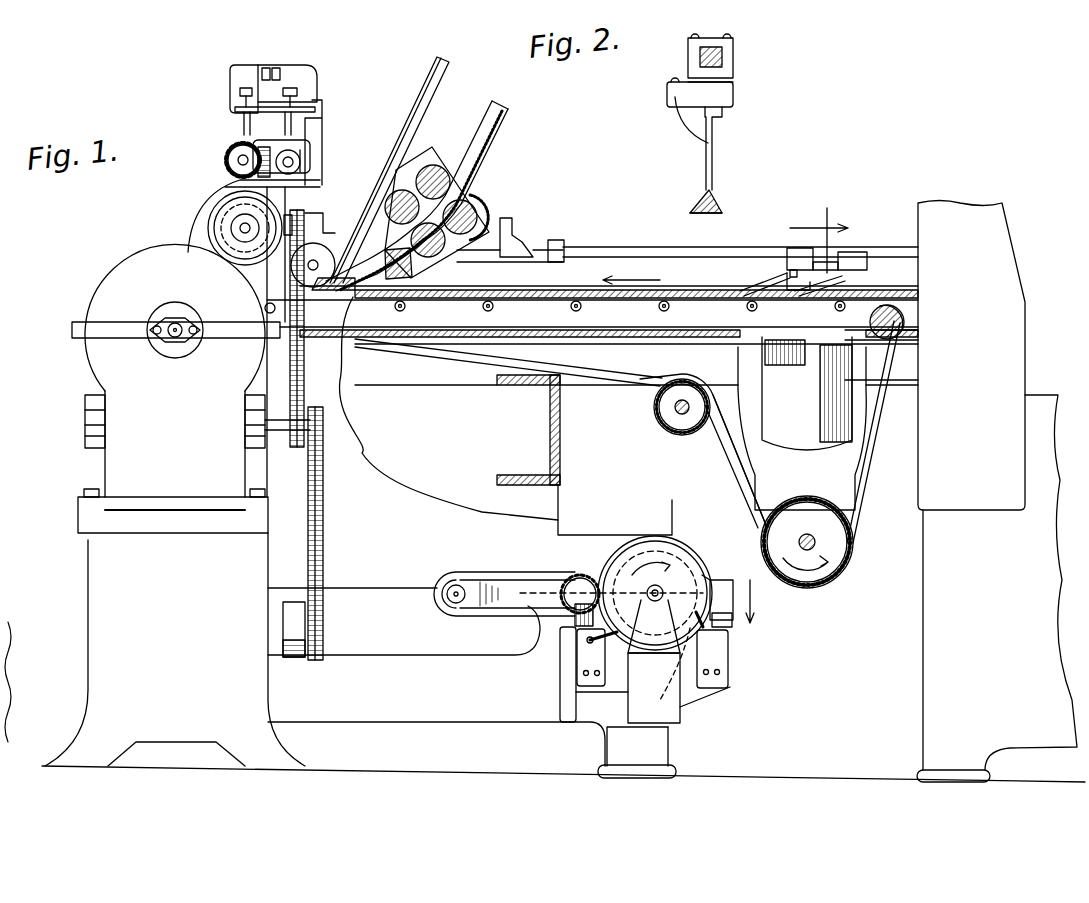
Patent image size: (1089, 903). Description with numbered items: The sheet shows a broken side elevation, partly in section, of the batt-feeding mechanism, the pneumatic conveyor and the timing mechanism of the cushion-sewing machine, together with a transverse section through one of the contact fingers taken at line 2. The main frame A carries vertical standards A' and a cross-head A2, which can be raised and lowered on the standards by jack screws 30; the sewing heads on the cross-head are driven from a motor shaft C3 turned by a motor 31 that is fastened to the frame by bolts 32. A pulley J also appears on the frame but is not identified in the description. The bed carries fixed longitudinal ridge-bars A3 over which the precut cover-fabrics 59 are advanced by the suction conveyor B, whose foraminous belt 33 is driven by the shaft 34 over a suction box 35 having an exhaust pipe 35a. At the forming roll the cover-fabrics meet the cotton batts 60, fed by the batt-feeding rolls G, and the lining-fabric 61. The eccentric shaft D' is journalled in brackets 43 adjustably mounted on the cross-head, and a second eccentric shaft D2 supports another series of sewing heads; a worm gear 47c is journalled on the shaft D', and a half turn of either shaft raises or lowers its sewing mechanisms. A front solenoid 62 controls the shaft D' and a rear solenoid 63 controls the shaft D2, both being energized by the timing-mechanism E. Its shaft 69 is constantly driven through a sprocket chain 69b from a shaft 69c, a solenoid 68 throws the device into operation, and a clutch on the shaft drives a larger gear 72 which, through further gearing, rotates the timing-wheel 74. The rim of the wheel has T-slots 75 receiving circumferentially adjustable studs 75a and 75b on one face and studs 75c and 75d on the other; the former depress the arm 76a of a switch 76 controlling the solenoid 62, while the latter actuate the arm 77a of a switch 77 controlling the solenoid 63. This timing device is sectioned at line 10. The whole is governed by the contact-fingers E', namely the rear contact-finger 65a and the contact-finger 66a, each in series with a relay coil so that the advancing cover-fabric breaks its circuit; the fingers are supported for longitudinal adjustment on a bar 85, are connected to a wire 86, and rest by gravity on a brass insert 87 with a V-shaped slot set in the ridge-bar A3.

In FIG. 1, the main frame A is at (173, 578).
In FIG. 1, the motor 31 is at (113, 283).
In FIG. 1, the motor shaft C3 is at (174, 340).
In FIG. 1, the bolts 32 is at (86, 487).
In FIG. 1, the vertical standards A' is at (237, 220).
In FIG. 1, the pulley J is at (336, 238).
In FIG. 1, the front solenoid 62 is at (240, 68).
In FIG. 1, the rear solenoid 63 is at (293, 78).
In FIG. 1, the cross-head A2 is at (319, 152).
In FIG. 1, the eccentric shaft D' is at (251, 149).
In FIG. 1, the worm gear 47c is at (230, 158).
In FIG. 1, the brackets 43 is at (243, 144).
In FIG. 1, the jack screws 30 is at (277, 168).
In FIG. 1, the eccentric shaft D2 is at (306, 168).
In FIG. 1, the lining-fabric 61 is at (401, 133).
In FIG. 1, the cotton batts 60 is at (500, 141).
In FIG. 1, the batt-feeding rolls G is at (463, 187).
In FIG. 1, the precut cover-fabrics 59 is at (574, 288).
In FIG. 1, the pneumatic conveyor B is at (609, 376).
In FIG. 1, the suction box 35 is at (720, 323).
In FIG. 1, the exhaust pipe 35a is at (818, 432).
In FIG. 1, the foraminous belt 33 is at (730, 460).
In FIG. 1, the shaft 34 is at (812, 545).
In FIG. 1, the sprocket chain 69b is at (497, 573).
In FIG. 1, the shaft 69c is at (455, 602).
In FIG. 1, the larger gear 72 is at (574, 580).
In FIG. 1, the timing-mechanism E is at (655, 589).
In FIG. 1, the shaft 69 is at (655, 602).
In FIG. 1, the arm 76a is at (595, 642).
In FIG. 1, the switch 76 is at (587, 663).
In FIG. 1, the stud 75a is at (575, 624).
In FIG. 1, the stud 75c is at (675, 677).
In FIG. 1, the switch 77 is at (722, 663).
In FIG. 1, the arm 77a is at (733, 628).
In FIG. 1, the solenoid 68 is at (723, 588).
In FIG. 1, the timing-wheel 74 is at (705, 582).
In FIG. 1, the section line 10 is at (764, 601).
In FIG. 1, the stud 75b is at (608, 570).
In FIG. 1, the T-slots 75 is at (618, 553).
In FIG. 1, the stud 75d is at (683, 550).
In FIG. 1, the contact-finger 66a is at (770, 281).
In FIG. 1, the contact-fingers E' is at (830, 252).
In FIG. 2, the contact-fingers E' is at (719, 70).
In FIG. 1, the rear contact-finger 65a is at (840, 278).
In FIG. 2, the rear contact-finger 65a is at (715, 148).
In FIG. 1, the longitudinal ridge-bars A3 is at (787, 290).
In FIG. 2, the longitudinal ridge-bars A3 is at (722, 208).
In FIG. 1, the section line 2 is at (819, 239).
In FIG. 2, the bar 85 is at (722, 56).
In FIG. 2, the wire 86 is at (678, 112).
In FIG. 2, the brass insert 87 is at (712, 200).